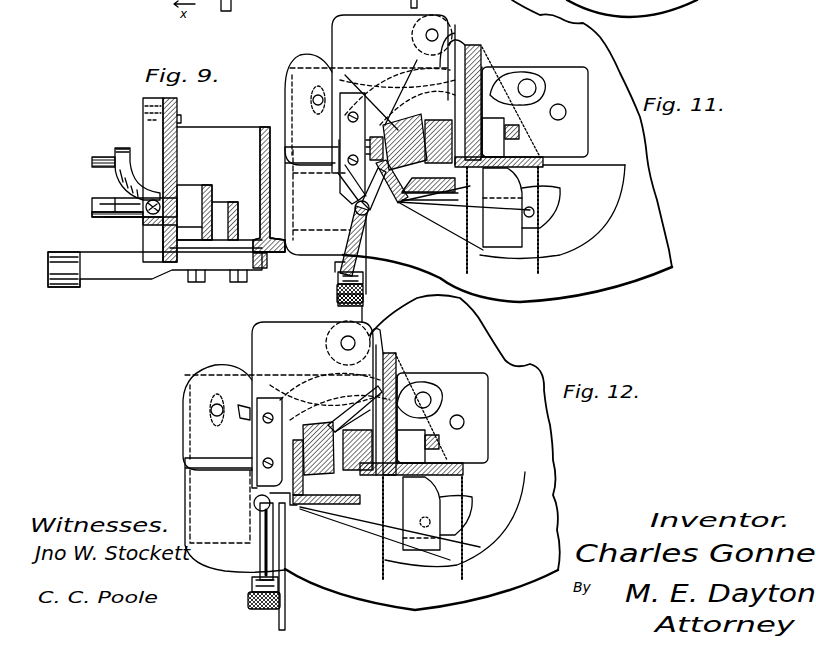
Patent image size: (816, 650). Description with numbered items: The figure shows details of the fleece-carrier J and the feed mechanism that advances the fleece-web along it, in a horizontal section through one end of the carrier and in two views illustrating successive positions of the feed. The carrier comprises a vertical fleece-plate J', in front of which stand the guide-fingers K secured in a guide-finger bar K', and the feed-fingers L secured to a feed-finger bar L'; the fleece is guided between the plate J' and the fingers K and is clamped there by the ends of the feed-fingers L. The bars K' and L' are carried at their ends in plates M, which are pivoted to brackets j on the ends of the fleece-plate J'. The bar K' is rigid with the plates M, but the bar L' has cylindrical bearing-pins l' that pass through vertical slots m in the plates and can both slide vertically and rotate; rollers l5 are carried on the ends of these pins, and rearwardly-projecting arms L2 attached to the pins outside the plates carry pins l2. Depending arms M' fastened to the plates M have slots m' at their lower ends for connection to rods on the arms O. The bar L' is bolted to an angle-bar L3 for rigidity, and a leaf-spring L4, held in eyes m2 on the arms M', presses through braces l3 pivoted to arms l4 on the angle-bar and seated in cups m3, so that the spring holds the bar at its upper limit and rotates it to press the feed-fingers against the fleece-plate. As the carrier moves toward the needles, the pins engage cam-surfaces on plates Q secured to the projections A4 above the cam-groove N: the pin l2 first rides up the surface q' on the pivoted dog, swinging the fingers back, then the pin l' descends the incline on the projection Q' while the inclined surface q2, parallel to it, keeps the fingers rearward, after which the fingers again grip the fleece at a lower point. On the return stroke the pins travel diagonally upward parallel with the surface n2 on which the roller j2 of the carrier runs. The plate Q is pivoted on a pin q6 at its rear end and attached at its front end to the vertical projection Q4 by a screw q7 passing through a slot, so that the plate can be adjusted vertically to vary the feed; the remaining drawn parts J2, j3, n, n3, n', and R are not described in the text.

In FIG. 9, the bracket j is at (144, 105).
In FIG. 11, the bracket j is at (503, 0).
In FIG. 12, the bracket j is at (370, 342).
In FIG. 9, the plate M is at (179, 180).
In FIG. 11, the plate M is at (372, 94).
In FIG. 12, the plate M is at (287, 395).
In FIG. 9, the fleece-plate J' is at (227, 189).
In FIG. 11, the fleece-plate J' is at (498, 99).
In FIG. 12, the fleece-plate J' is at (425, 408).
In FIG. 9, the guide-finger bar K' is at (207, 214).
In FIG. 11, the guide-finger bar K' is at (504, 231).
In FIG. 12, the guide-finger bar K' is at (390, 533).
In FIG. 9, the rearwardly-projecting arm L2 is at (116, 178).
In FIG. 9, the pin l2 is at (103, 153).
In FIG. 9, the feed-finger bar L' is at (147, 212).
In FIG. 11, the feed-finger bar L' is at (396, 135).
In FIG. 12, the feed-finger bar L' is at (312, 438).
In FIG. 9, the roller l5 is at (98, 217).
In FIG. 9, the bearing-pin l' is at (124, 226).
In FIG. 9, the vertical slot m is at (155, 239).
In FIG. 9, the base J2 is at (157, 269).
In FIG. 11, the base J2 is at (487, 250).
In FIG. 12, the base J2 is at (400, 560).
In FIG. 9, the roller j2 is at (70, 285).
In FIG. 11, the roller j2 is at (418, 220).
In FIG. 12, the roller j2 is at (341, 553).
In FIG. 9, the foot j3 is at (278, 242).
In FIG. 11, the foot j3 is at (517, 171).
In FIG. 12, the foot j3 is at (468, 482).
In FIG. 11, the projection A4 is at (520, 151).
In FIG. 12, the projection A4 is at (422, 452).
In FIG. 11, the feed-finger L is at (381, 87).
In FIG. 12, the feed-finger L is at (338, 401).
In FIG. 11, the vertical bar or projection Q4 is at (308, 109).
In FIG. 12, the vertical bar or projection Q4 is at (217, 417).
In FIG. 11, the screw q7 is at (313, 104).
In FIG. 12, the screw q7 is at (205, 412).
In FIG. 11, the fleece-carrier J is at (490, 91).
In FIG. 12, the fleece-carrier J is at (408, 402).
In FIG. 11, the cam-plate Q is at (553, 116).
In FIG. 12, the cam-plate Q is at (442, 418).
In FIG. 11, the inclined surface q2 is at (517, 88).
In FIG. 12, the inclined surface q2 is at (419, 401).
In FIG. 11, the pivot-pin q6 is at (559, 116).
In FIG. 12, the pivot-pin q6 is at (467, 425).
In FIG. 11, the body n is at (325, 201).
In FIG. 12, the body n is at (271, 515).
In FIG. 11, the brace l3 is at (375, 165).
In FIG. 12, the brace l3 is at (260, 517).
In FIG. 11, the arm l4 is at (435, 218).
In FIG. 12, the arm l4 is at (256, 496).
In FIG. 11, the surface n2 is at (450, 221).
In FIG. 12, the surface n2 is at (364, 536).
In FIG. 11, the slot m' is at (365, 272).
In FIG. 11, the cup m3 is at (340, 270).
In FIG. 12, the cup m3 is at (252, 588).
In FIG. 11, the eye m2 is at (338, 292).
In FIG. 12, the eye m2 is at (255, 575).
In FIG. 11, the leaf-spring L4 is at (364, 297).
In FIG. 12, the leaf-spring L4 is at (266, 609).
In FIG. 11, the cam-groove N is at (546, 219).
In FIG. 11, the arm O is at (508, 207).
In FIG. 12, the arm O is at (421, 513).
In FIG. 11, the segment n3 is at (562, 196).
In FIG. 12, the segment n3 is at (456, 516).
In FIG. 11, the arm n' is at (563, 243).
In FIG. 12, the arm n' is at (472, 547).
In FIG. 11, the rod R is at (560, 275).
In FIG. 12, the rod R is at (445, 526).
In FIG. 12, the guide-finger K is at (316, 371).
In FIG. 12, the projection Q' is at (241, 404).
In FIG. 12, the inclined surface q' is at (225, 429).
In FIG. 12, the angle-bar L3 is at (371, 546).
In FIG. 12, the depending arm M' is at (281, 569).